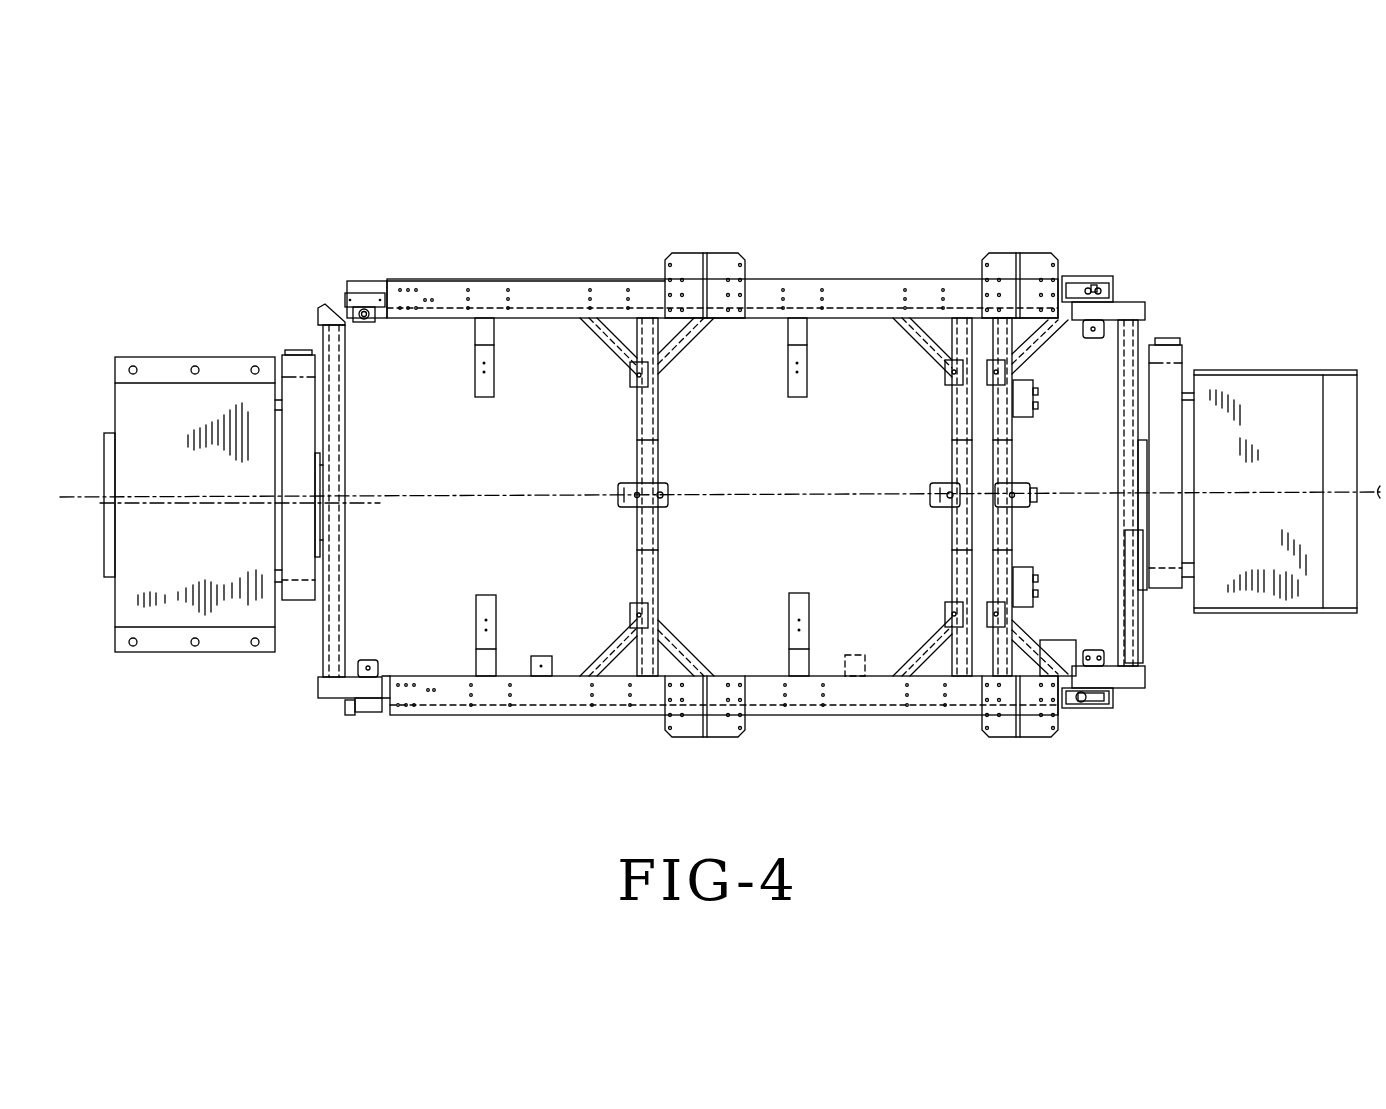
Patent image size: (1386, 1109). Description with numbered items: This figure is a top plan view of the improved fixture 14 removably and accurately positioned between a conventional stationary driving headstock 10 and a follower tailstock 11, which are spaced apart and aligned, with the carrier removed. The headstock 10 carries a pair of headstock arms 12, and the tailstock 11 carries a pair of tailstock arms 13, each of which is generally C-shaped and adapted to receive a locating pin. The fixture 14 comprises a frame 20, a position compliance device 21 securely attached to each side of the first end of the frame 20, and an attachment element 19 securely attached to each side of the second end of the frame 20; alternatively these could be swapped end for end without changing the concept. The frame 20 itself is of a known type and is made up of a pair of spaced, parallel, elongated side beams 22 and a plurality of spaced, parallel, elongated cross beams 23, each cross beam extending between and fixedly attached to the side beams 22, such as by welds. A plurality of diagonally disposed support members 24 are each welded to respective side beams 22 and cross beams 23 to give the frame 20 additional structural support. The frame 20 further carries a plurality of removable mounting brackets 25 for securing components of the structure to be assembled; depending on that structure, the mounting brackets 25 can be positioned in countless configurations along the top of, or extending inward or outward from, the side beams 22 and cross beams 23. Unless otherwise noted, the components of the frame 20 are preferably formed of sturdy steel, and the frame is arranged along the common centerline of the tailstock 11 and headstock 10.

The stationary driving headstock 10 is at (1270, 405).
The follower tailstock 11 is at (151, 417).
The headstock arms 12 is at (1128, 306).
The tailstock arms 13 is at (331, 310).
The fixture 14 is at (546, 270).
The attachment element 19 is at (1083, 275).
The frame 20 is at (600, 278).
The position compliance device 21 is at (372, 278).
The side beams 22 is at (848, 299).
The cross beams 23 is at (648, 420).
The diagonally disposed support members 24 is at (607, 330).
The removable mounting brackets 25 is at (483, 384).